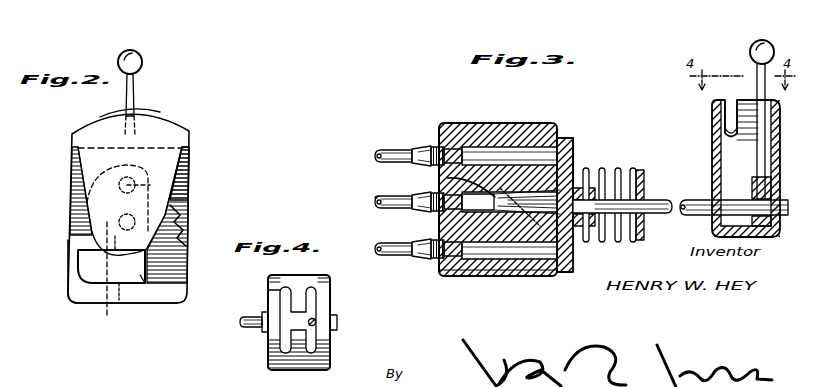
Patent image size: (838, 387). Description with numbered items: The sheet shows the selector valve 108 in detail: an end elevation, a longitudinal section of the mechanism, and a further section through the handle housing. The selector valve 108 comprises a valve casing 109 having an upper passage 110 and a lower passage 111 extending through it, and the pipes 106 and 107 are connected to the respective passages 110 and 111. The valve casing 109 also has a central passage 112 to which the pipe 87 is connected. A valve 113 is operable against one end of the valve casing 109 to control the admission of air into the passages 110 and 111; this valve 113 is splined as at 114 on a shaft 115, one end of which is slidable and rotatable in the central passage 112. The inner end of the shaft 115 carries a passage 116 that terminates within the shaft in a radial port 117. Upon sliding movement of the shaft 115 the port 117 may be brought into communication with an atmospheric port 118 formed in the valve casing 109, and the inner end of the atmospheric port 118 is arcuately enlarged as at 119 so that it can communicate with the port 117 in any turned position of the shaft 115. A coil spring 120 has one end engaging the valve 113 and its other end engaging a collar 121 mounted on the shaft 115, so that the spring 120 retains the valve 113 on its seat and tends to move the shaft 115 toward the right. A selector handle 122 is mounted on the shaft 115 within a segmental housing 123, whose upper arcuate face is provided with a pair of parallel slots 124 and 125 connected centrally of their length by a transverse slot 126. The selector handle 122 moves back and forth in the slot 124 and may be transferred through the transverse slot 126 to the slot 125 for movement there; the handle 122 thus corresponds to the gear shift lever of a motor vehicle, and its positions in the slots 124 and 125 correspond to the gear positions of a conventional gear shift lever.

In FIG. 3, the pipe 87 is at (378, 198).
In FIG. 3, the pipe 106 is at (394, 150).
In FIG. 3, the pipe 107 is at (393, 248).
In FIG. 2, the selector valve 108 is at (66, 159).
In FIG. 3, the selector valve 108 is at (519, 120).
In FIG. 2, the valve casing 109 is at (76, 243).
In FIG. 3, the valve casing 109 is at (487, 115).
In FIG. 2, the upper passage 110 is at (191, 167).
In FIG. 3, the upper passage 110 is at (556, 129).
In FIG. 2, the lower passage 111 is at (105, 274).
In FIG. 3, the lower passage 111 is at (490, 268).
In FIG. 2, the central passage 112 is at (102, 217).
In FIG. 3, the central passage 112 is at (417, 192).
In FIG. 2, the valve 113 is at (137, 305).
In FIG. 3, the valve 113 is at (576, 149).
In FIG. 3, the spline 114 is at (588, 170).
In FIG. 4, the shaft 115 is at (246, 329).
In FIG. 3, the shaft 115 is at (690, 200).
In FIG. 3, the passage 116 is at (447, 178).
In FIG. 3, the radial port 117 is at (576, 242).
In FIG. 2, the atmospheric port 118 is at (184, 230).
In FIG. 2, the arcuate enlargement 119 is at (118, 198).
In FIG. 3, the arcuate enlargement 119 is at (541, 268).
In FIG. 3, the coil spring 120 is at (620, 168).
In FIG. 3, the collar 121 is at (644, 175).
In FIG. 2, the selector handle 122 is at (136, 96).
In FIG. 4, the selector handle 122 is at (317, 321).
In FIG. 3, the selector handle 122 is at (762, 152).
In FIG. 2, the segmental housing 123 is at (181, 135).
In FIG. 4, the segmental housing 123 is at (331, 362).
In FIG. 4, the slot 124 is at (323, 298).
In FIG. 3, the slot 124 is at (766, 125).
In FIG. 4, the slot 125 is at (281, 290).
In FIG. 3, the slot 125 is at (718, 121).
In FIG. 4, the transverse slot 126 is at (293, 302).
In FIG. 3, the transverse slot 126 is at (741, 111).